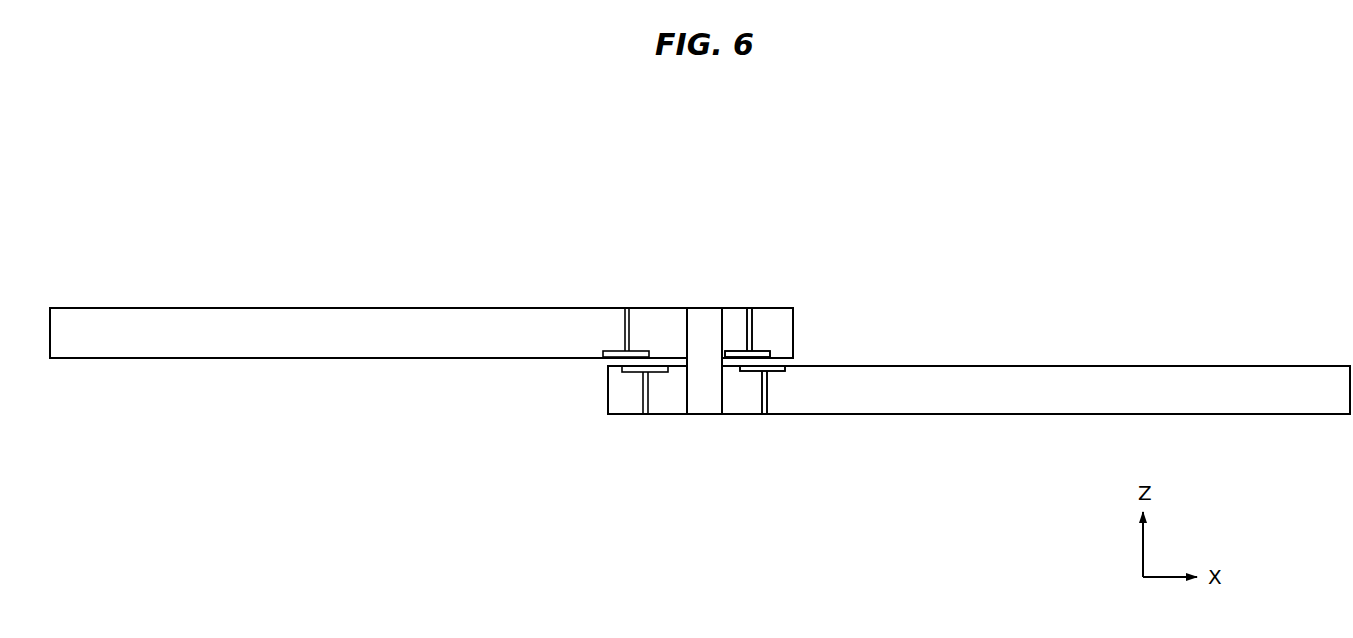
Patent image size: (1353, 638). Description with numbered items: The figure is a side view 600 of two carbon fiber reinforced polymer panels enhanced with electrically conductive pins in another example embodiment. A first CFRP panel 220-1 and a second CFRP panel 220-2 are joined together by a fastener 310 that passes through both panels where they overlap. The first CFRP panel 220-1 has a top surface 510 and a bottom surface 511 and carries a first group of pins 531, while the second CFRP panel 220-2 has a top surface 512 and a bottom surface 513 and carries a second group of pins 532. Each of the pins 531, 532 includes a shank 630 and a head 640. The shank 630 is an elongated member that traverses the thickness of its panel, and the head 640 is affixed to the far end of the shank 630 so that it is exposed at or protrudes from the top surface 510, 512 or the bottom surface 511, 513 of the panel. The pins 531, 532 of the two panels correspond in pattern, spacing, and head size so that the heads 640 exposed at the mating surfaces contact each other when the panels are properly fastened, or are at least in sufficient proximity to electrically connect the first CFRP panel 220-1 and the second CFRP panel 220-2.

The side view 600 is at (848, 126).
The first CFRP panel 220-1 is at (167, 308).
The second CFRP panel 220-2 is at (1135, 366).
The fastener 310 is at (708, 402).
The top surface 510 is at (484, 301).
The bottom surface 511 is at (484, 366).
The top surface 512 is at (951, 359).
The bottom surface 513 is at (951, 421).
The first group of pins 531 is at (623, 301).
The second group of pins 532 is at (647, 422).
The shank 630 is at (752, 322).
The head 640 is at (765, 350).